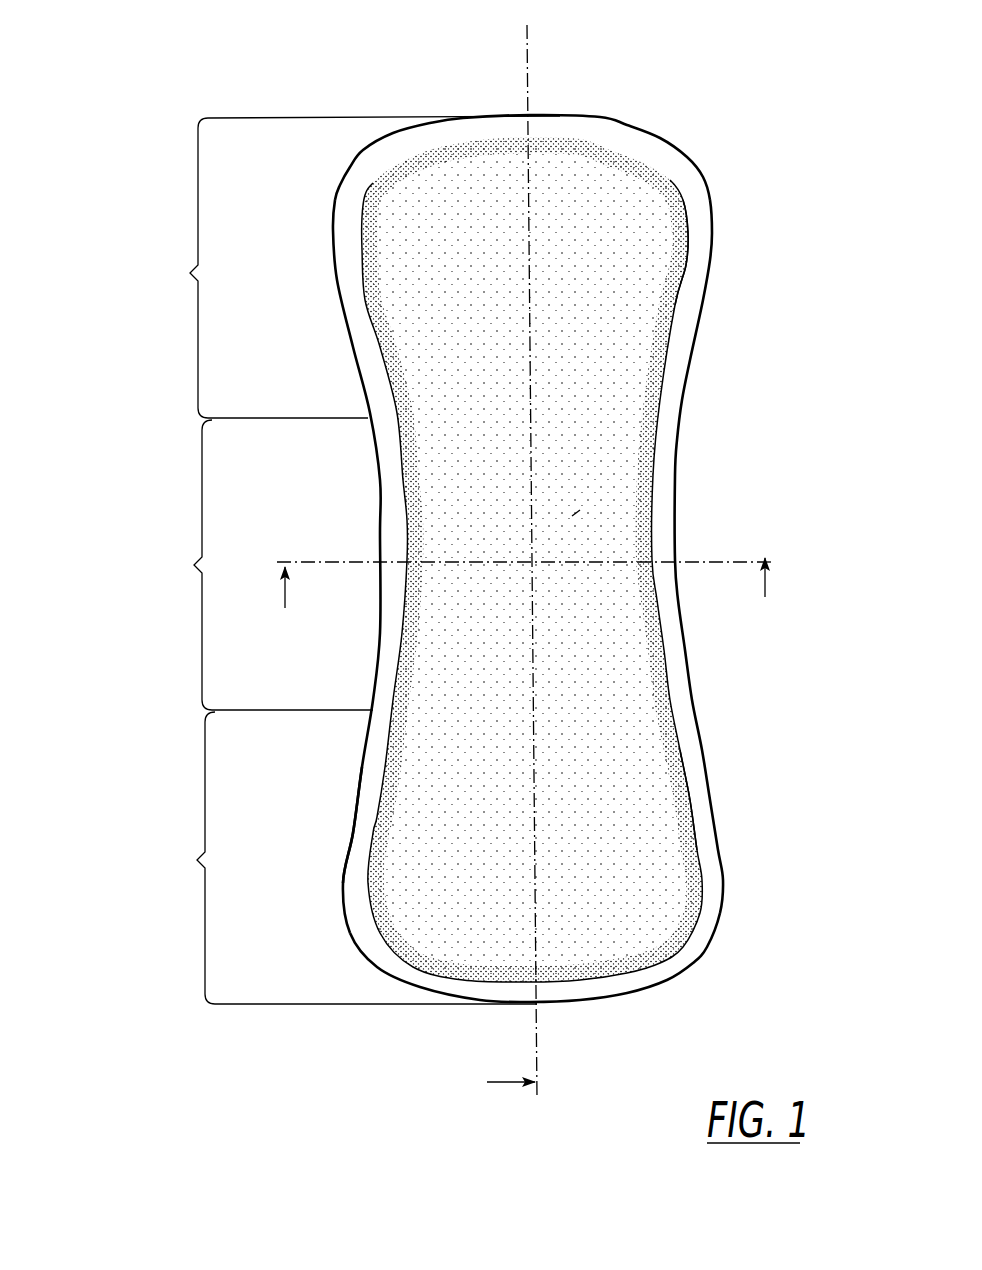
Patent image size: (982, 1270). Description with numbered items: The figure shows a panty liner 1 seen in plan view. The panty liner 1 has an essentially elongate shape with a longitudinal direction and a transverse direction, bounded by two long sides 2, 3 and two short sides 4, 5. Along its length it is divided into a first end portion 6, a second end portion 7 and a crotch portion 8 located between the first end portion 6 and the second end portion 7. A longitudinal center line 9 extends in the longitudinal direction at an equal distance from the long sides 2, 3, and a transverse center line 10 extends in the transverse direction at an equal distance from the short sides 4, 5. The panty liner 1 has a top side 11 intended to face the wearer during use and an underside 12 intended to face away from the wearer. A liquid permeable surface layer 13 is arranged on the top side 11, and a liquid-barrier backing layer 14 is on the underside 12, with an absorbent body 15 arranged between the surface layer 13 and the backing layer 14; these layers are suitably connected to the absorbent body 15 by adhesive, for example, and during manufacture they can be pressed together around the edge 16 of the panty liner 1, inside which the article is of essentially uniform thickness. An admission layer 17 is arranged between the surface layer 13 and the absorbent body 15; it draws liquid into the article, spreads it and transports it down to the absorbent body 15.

The panty liner 1 is at (727, 55).
The long side 2 is at (380, 505).
The long side 3 is at (693, 698).
The short side 4 is at (565, 115).
The short side 5 is at (563, 1003).
The first end portion 6 is at (187, 273).
The second end portion 7 is at (195, 858).
The crotch portion 8 is at (190, 565).
The longitudinal center line 9 is at (523, 30).
The transverse center line 10 is at (515, 601).
The top side 11 is at (403, 242).
The underside 12 is at (403, 270).
The liquid permeable surface layer 13 is at (648, 210).
The liquid-barrier backing layer 14 is at (690, 250).
The absorbent body 15 is at (580, 510).
The edge 16 is at (360, 843).
The admission layer 17 is at (637, 827).